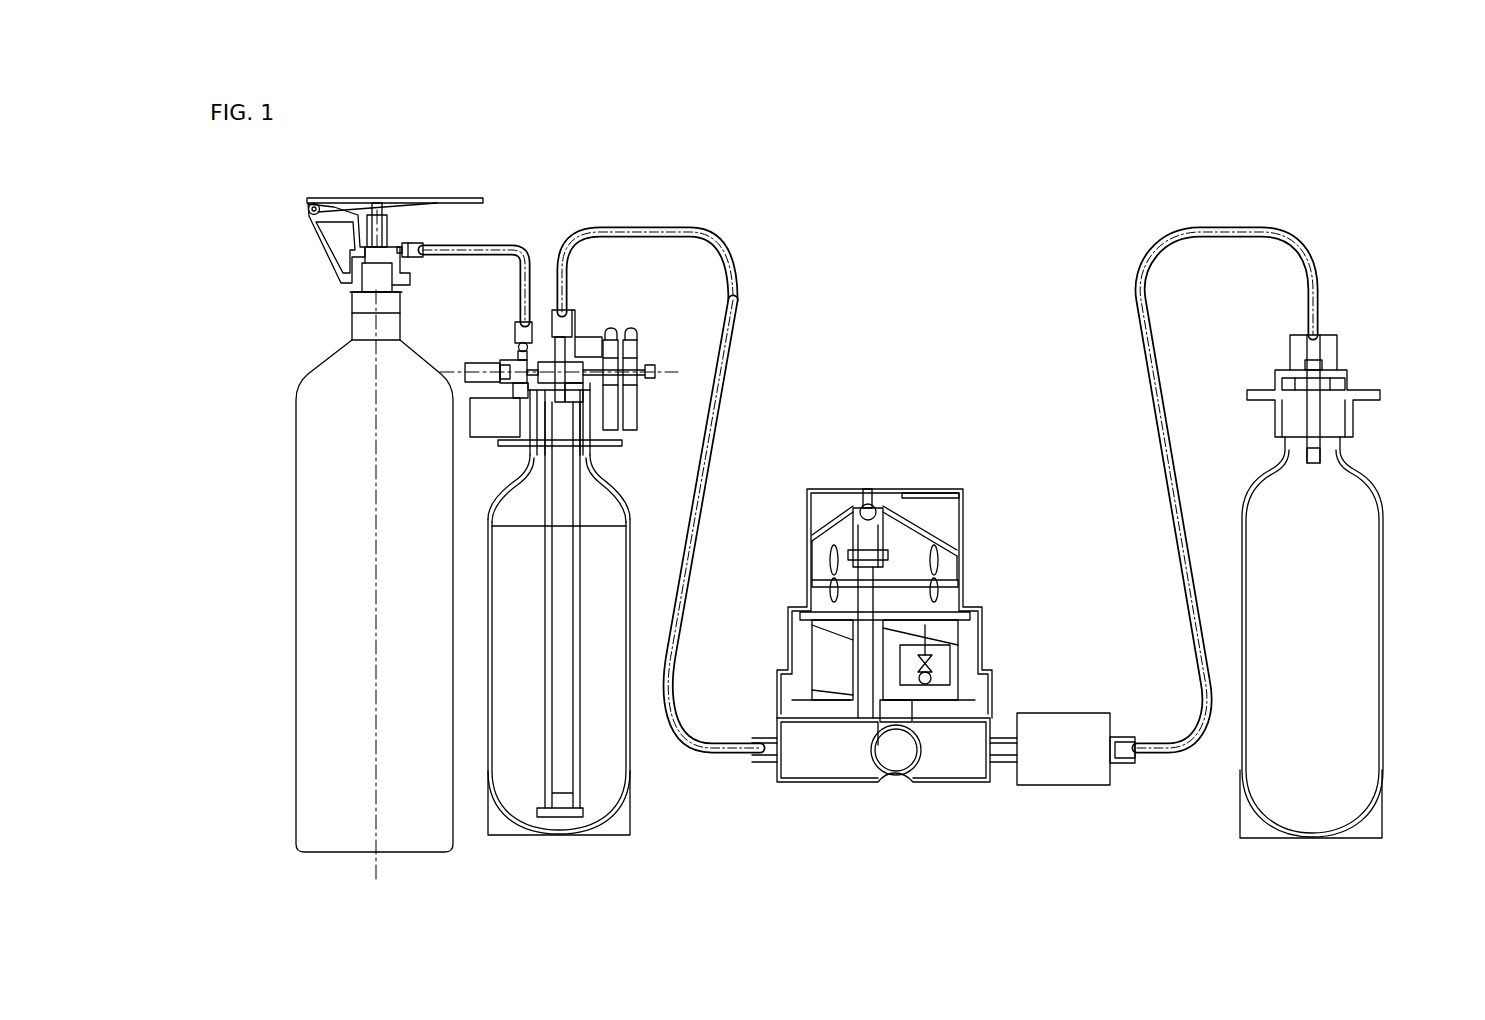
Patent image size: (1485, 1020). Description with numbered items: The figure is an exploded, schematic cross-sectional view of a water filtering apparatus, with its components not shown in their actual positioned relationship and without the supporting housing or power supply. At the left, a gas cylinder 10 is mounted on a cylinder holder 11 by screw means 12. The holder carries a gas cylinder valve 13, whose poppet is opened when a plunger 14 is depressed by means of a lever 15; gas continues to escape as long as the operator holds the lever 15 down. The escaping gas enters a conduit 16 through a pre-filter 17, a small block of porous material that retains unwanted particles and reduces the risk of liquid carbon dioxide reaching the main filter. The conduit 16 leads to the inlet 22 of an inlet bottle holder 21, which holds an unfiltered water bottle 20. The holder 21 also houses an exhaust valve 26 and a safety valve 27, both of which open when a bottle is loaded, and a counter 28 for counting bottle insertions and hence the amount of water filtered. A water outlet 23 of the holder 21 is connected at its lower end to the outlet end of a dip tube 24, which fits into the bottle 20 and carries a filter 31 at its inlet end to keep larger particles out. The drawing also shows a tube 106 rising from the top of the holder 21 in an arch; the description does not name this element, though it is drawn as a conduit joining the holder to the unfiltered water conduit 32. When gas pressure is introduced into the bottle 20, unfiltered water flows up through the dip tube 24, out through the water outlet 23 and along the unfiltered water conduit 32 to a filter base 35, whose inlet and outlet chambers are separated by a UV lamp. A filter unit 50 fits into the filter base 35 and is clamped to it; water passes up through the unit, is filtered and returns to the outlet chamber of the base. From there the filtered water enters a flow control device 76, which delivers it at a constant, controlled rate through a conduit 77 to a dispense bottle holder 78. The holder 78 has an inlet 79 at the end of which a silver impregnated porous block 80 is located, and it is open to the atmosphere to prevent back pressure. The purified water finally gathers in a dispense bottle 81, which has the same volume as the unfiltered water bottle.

The gas cylinder 10 is at (320, 568).
The cylinder holder 11 is at (313, 262).
The screw means 12 is at (362, 275).
The gas cylinder valve 13 is at (380, 250).
The plunger 14 is at (373, 202).
The lever 15 is at (414, 198).
The conduit 16 is at (512, 247).
The pre-filter 17 is at (423, 248).
The unfiltered water bottle 20 is at (616, 744).
The inlet bottle holder 21 is at (590, 352).
The inlet 22 is at (522, 322).
The water outlet 23 is at (563, 335).
The dip tube 24 is at (552, 764).
The exhaust valve 26 is at (612, 333).
The safety valve 27 is at (636, 333).
The counter 28 is at (478, 422).
The filter 31 is at (581, 815).
The unfiltered water conduit 32 is at (720, 422).
The filter base 35 is at (827, 783).
The filter unit 50 is at (907, 487).
The flow control device 76 is at (1068, 783).
The conduit 77 is at (1140, 275).
The dispense bottle holder 78 is at (1340, 374).
The inlet 79 is at (1317, 360).
The silver impregnated porous block 80 is at (1320, 450).
The dispense bottle 81 is at (1270, 790).
The pressure tube 106 is at (607, 232).